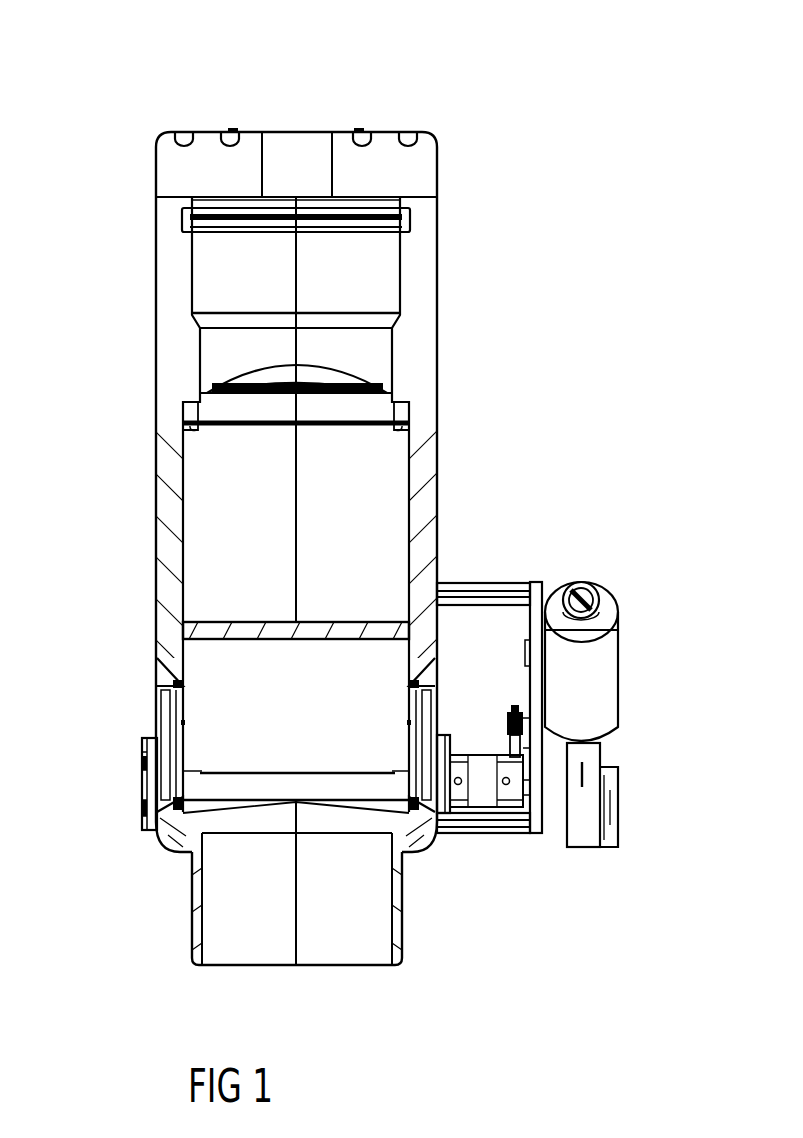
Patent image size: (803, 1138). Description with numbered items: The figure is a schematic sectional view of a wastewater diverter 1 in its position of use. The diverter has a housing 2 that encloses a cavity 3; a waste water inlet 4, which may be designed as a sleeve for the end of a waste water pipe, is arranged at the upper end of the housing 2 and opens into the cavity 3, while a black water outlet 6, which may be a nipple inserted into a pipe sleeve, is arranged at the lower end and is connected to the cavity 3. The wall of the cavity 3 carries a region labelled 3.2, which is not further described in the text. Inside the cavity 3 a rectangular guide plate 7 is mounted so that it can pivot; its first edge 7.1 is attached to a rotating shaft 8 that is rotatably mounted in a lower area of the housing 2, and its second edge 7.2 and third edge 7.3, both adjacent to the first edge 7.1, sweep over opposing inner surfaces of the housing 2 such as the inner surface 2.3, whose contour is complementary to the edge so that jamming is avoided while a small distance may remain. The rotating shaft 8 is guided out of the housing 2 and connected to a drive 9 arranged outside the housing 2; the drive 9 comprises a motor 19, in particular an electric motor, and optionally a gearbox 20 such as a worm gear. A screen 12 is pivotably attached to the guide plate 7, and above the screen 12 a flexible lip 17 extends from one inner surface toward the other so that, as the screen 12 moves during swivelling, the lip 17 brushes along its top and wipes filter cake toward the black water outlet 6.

The wastewater diverter 1 is at (126, 95).
The housing 2 is at (167, 253).
The inner surface 2.3 is at (182, 482).
The cavity 3 is at (390, 477).
The insert wall 3.2 is at (412, 537).
The waste water inlet 4 is at (402, 272).
The black water outlet 6 is at (192, 913).
The guide plate 7 is at (228, 662).
The first edge 7.1 is at (280, 773).
The second edge 7.2 is at (408, 752).
The third edge 7.3 is at (185, 723).
The rotating shaft 8 is at (220, 790).
The drive 9 is at (648, 697).
The screen 12 is at (240, 408).
The flexible lip 17 is at (357, 373).
The motor 19 is at (603, 652).
The gearbox 20 is at (582, 810).